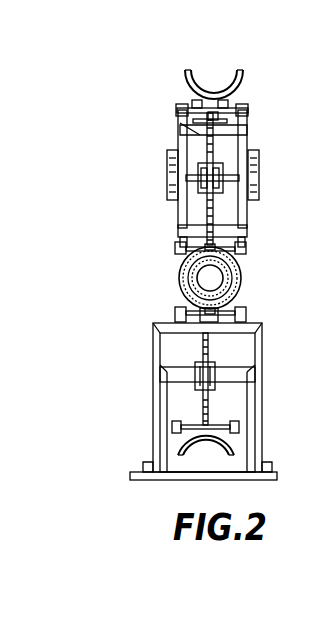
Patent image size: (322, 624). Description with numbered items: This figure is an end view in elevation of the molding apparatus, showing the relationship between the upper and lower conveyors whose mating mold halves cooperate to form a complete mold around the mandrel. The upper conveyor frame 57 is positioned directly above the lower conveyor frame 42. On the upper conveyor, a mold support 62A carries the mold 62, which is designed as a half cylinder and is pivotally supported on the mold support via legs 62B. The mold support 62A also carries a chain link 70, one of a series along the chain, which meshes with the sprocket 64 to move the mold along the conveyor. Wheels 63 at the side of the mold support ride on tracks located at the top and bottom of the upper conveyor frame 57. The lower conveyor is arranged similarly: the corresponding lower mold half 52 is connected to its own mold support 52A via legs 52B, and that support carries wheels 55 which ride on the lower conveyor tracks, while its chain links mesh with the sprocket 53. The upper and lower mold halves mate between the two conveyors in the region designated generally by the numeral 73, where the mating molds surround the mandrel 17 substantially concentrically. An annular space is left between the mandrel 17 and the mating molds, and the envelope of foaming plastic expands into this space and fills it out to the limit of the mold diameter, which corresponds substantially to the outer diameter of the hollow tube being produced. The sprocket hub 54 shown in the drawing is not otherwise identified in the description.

The mold 62 is at (243, 78).
The mold support 62A is at (191, 106).
The legs 62B is at (232, 106).
The wheels 63 is at (176, 110).
The chain link 70 is at (192, 131).
The sprocket 64 is at (222, 143).
The upper conveyor frame 57 is at (158, 193).
The mandrel 17 is at (184, 268).
The mating region 73 is at (134, 283).
The lower mold half 52 is at (239, 287).
The mold support 52A is at (246, 316).
The legs 52B is at (176, 310).
The wheels 55 is at (172, 314).
The lower conveyor frame 42 is at (144, 405).
The sprocket 53 is at (210, 344).
The nut 54 is at (228, 387).